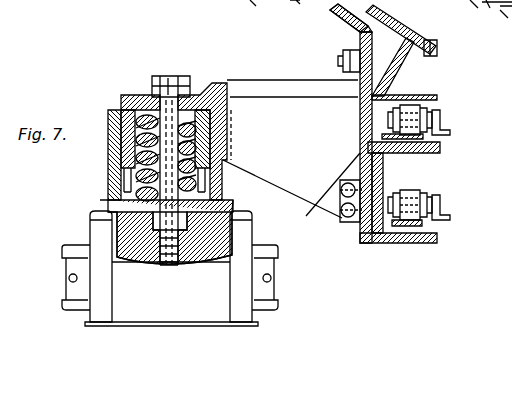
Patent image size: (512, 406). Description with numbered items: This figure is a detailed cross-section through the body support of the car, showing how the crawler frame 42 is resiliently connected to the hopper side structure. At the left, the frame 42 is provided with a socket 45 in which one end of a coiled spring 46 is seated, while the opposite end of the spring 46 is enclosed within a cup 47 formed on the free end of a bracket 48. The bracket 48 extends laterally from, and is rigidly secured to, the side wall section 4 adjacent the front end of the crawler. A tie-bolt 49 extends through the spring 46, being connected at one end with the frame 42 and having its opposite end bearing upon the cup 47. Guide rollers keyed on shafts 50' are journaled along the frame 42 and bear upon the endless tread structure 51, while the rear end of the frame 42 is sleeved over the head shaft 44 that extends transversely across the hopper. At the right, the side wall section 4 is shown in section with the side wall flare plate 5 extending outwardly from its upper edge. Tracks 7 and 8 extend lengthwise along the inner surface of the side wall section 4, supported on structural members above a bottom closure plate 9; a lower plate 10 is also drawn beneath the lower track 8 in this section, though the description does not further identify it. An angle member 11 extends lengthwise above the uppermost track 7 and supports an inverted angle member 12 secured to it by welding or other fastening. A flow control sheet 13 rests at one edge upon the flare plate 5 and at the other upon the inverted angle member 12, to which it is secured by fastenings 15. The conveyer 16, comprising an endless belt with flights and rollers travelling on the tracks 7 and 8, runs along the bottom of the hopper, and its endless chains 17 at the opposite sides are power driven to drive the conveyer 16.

The side wall section 4 is at (291, 197).
The side wall flare plate 5 is at (330, 12).
The track 7 is at (441, 144).
The track 8 is at (430, 219).
The bottom closure plate 9 is at (440, 153).
The bottom plate 10 is at (440, 240).
The angle member 11 is at (440, 96).
The inverted angle member 12 is at (398, 66).
The flow control sheet 13 is at (408, 30).
The fastenings 15 is at (438, 44).
The conveyer 16 is at (442, 134).
The endless chains 17 is at (360, 119).
The frame 42 is at (228, 216).
The head shaft 44 is at (258, 0).
The socket 45 is at (108, 156).
The coiled spring 46 is at (108, 186).
The cup 47 is at (121, 108).
The bracket 48 is at (268, 81).
The tie-bolt 49 is at (160, 95).
The shaft 50' is at (474, 24).
The endless tread structure 51 is at (318, 0).